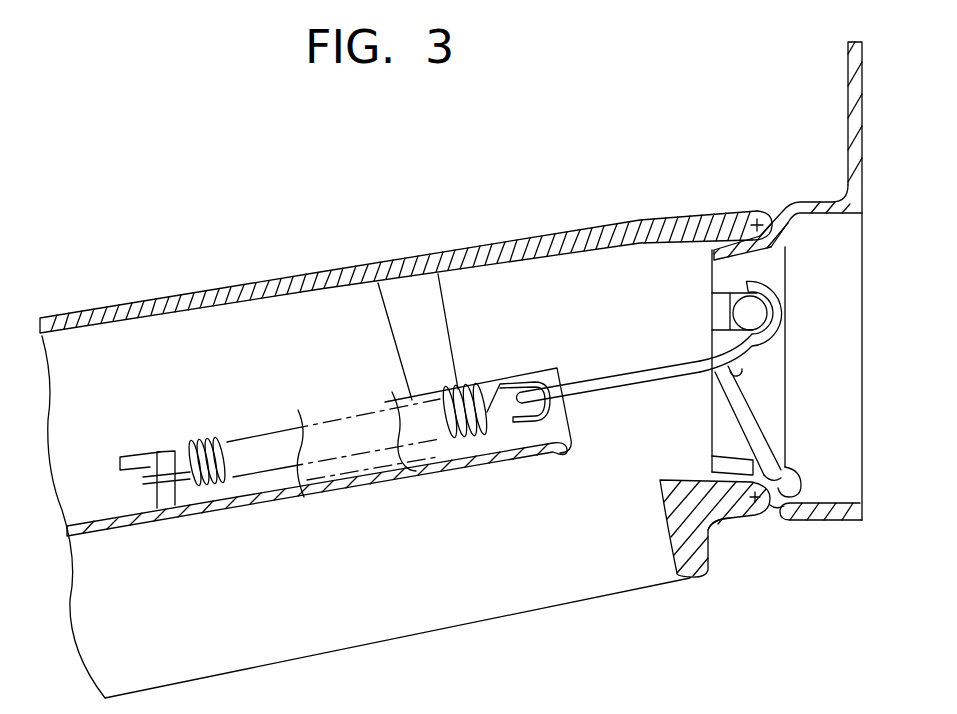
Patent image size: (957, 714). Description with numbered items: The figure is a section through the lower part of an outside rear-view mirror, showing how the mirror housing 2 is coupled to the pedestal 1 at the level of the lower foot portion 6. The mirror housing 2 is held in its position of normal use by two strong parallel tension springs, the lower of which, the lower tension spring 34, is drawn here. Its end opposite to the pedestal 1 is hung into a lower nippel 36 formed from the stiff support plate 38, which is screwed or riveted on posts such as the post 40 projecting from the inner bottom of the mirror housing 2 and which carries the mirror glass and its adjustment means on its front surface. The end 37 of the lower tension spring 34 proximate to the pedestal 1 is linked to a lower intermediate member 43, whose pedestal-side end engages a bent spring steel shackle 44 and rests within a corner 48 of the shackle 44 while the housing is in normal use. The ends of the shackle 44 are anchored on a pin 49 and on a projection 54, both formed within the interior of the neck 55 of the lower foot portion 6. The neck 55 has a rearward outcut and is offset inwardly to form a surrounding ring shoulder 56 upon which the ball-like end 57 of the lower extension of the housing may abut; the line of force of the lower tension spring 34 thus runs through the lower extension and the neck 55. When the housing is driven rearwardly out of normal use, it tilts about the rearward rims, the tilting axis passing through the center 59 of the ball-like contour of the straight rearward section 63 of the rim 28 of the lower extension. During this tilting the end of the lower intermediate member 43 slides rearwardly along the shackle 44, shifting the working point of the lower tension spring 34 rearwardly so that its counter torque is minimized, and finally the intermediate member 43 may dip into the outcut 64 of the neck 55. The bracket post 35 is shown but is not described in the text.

The pedestal 1 is at (866, 136).
The mirror housing 2 is at (268, 280).
The lower foot portion 6 is at (812, 203).
The rim of the lower extension 28 is at (719, 213).
The lower tension spring 34 is at (205, 438).
The bracket post 35 is at (178, 466).
The lower nippel 36 is at (131, 455).
The end of lower tension spring proximate to the pedestal 37 is at (506, 385).
The support plate 38 is at (185, 511).
The post 40 is at (395, 346).
The lower intermediate member 43 is at (616, 378).
The bent spring steel shackle 44 is at (752, 407).
The corner of shackle 48 is at (712, 346).
The pin 49 is at (770, 317).
The projection 54 is at (791, 481).
The neck of lower foot portion 55 is at (770, 255).
The ring shoulder 56 is at (774, 508).
The ball-like end of lower extension 57 is at (760, 506).
The center of ball-like contour 59 is at (662, 510).
The straight rearward section of rim 63 is at (735, 520).
The outcut of neck 64 is at (722, 463).